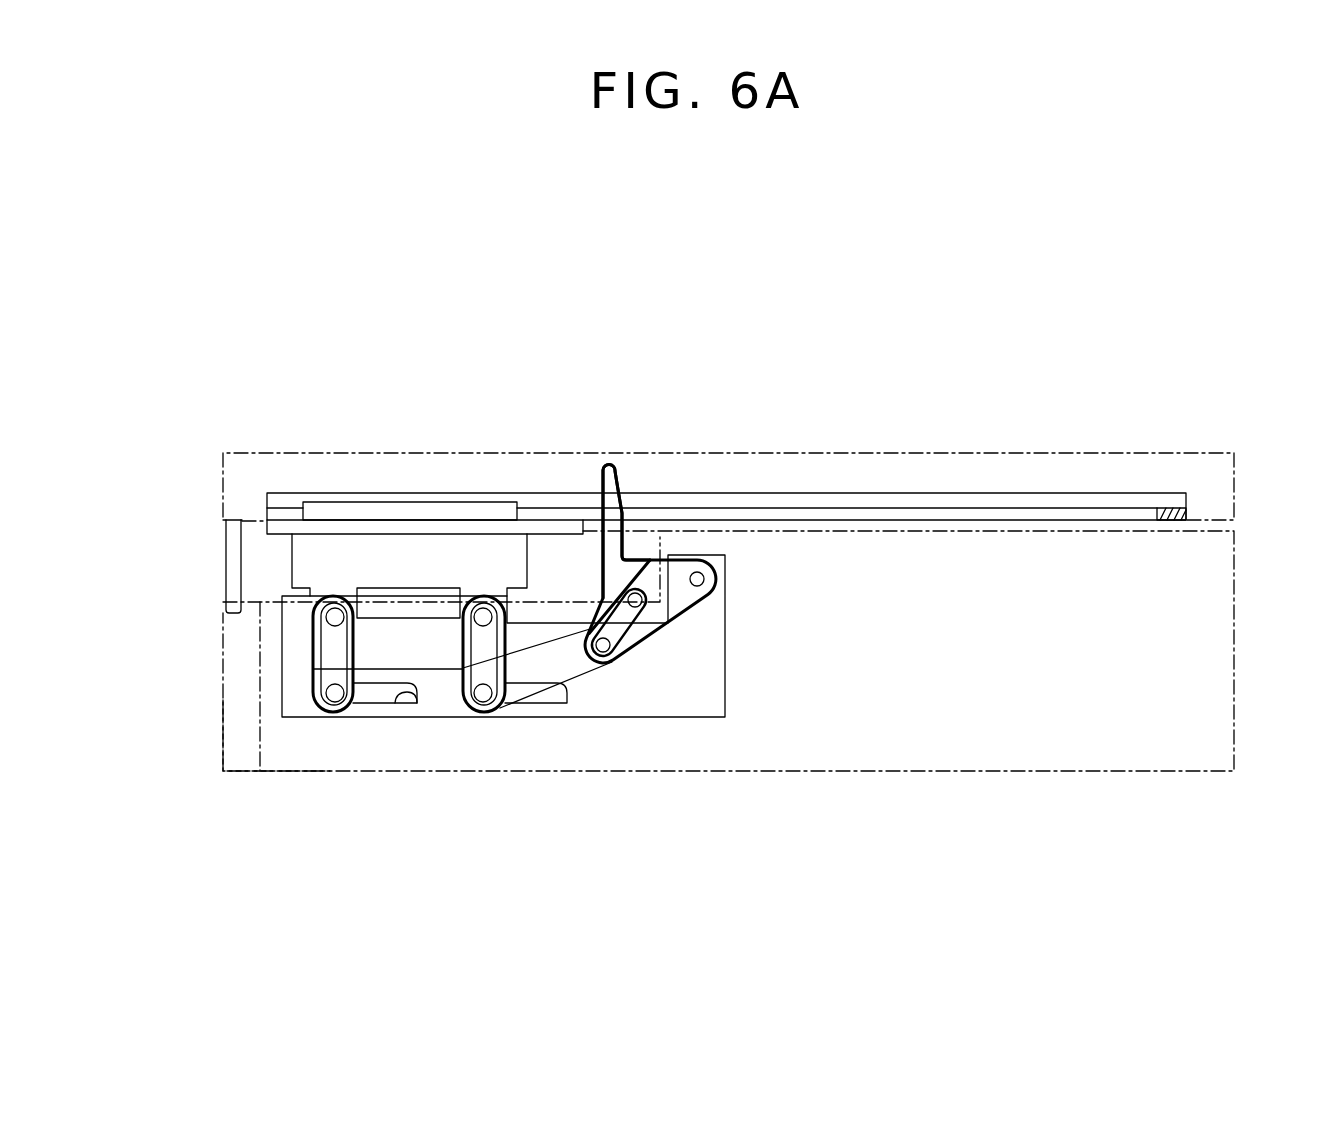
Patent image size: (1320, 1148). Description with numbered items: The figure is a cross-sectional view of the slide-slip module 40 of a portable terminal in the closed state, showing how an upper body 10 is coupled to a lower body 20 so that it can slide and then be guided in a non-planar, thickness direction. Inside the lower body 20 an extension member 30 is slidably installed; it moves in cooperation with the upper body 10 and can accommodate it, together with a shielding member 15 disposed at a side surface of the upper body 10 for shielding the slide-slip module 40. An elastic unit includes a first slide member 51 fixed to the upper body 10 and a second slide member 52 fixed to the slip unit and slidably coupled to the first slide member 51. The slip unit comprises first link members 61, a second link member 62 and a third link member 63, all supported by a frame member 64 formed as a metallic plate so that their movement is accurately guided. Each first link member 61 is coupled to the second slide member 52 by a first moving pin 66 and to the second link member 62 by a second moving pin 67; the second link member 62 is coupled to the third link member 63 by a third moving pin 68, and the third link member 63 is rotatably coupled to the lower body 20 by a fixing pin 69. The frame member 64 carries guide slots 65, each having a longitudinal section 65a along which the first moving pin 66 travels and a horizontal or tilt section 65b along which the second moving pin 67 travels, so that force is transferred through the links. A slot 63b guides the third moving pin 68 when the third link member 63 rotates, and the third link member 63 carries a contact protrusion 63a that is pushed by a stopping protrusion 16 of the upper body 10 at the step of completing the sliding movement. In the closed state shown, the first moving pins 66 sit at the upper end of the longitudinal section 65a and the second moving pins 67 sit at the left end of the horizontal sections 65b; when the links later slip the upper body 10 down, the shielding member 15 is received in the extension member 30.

The upper body 10 is at (1003, 452).
The shielding member 15 is at (223, 548).
The stopping protrusion 16 is at (1160, 508).
The lower body 20 is at (1010, 725).
The extension member 30 is at (233, 772).
The slide-slip module 40 is at (498, 649).
The first slide member 51 is at (536, 505).
The second slide member 52 is at (395, 530).
The first link member 61 is at (312, 657).
The second link member 62 is at (588, 656).
The third link member 63 is at (653, 646).
The contact protrusion 63a is at (608, 620).
The slot 63b is at (636, 596).
The frame member 64 is at (698, 690).
The guide slot 65 is at (462, 795).
The longitudinal section 65a is at (362, 704).
The horizontal section 65b is at (424, 704).
The first moving pin 66 is at (320, 600).
The second moving pin 67 is at (335, 696).
The third moving pin 68 is at (594, 624).
The fixing pin 69 is at (699, 578).